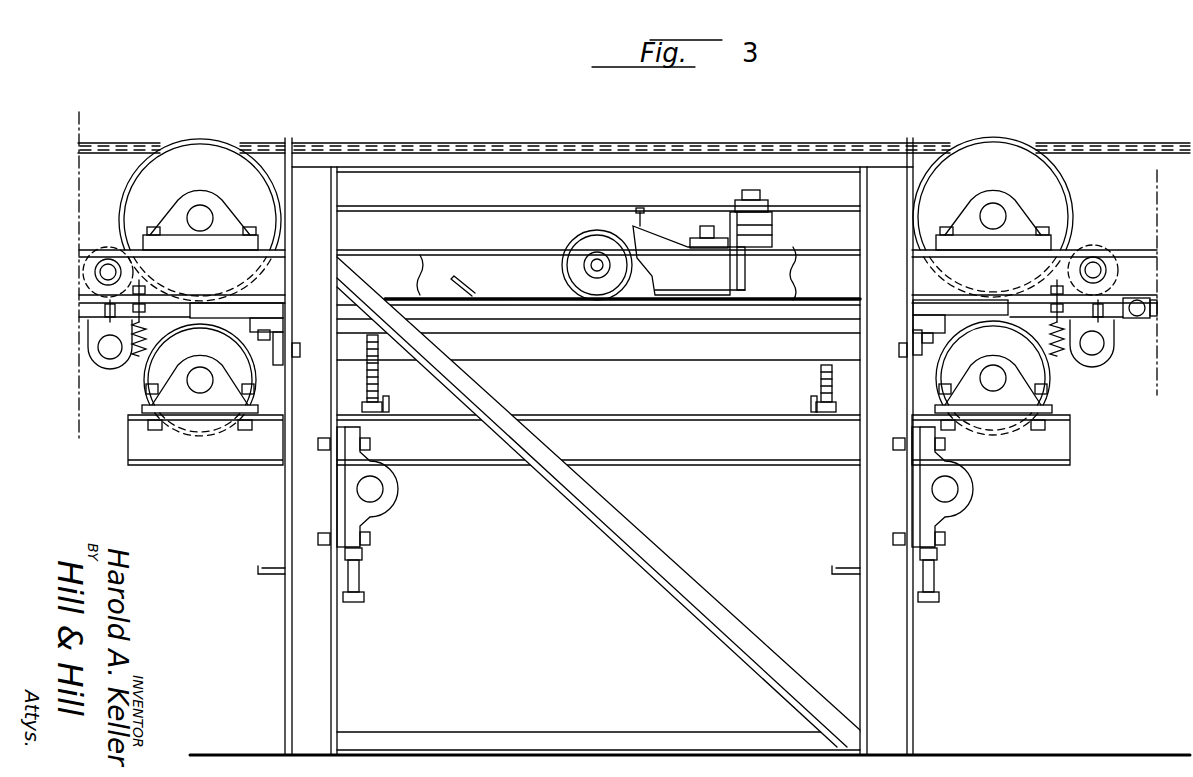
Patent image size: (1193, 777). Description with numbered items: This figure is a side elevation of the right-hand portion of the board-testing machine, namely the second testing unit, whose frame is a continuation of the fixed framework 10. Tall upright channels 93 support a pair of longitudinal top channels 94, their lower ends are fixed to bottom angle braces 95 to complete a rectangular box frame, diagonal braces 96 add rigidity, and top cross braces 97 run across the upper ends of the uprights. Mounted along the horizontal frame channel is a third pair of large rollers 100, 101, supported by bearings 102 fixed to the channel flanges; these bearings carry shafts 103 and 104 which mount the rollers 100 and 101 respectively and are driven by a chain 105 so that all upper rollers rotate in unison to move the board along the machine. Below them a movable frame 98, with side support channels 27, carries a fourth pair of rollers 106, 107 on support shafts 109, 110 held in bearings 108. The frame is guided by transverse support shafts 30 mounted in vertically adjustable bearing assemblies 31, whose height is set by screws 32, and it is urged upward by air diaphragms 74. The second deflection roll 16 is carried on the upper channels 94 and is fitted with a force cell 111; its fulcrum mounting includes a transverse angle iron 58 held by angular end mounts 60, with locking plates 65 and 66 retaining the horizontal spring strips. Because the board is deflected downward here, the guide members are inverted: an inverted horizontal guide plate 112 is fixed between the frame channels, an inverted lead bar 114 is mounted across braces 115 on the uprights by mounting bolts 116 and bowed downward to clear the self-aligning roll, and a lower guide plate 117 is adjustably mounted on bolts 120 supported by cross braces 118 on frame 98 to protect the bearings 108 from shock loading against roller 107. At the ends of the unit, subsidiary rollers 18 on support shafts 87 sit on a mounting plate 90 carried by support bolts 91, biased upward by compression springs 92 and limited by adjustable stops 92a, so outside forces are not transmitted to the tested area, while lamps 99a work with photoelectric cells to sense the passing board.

The framework 10 is at (340, 252).
The second deflection roll 16 is at (560, 250).
The subsidiary rollers 18 is at (112, 253).
The side support channels 27 is at (773, 448).
The transverse support shafts 30 is at (378, 490).
The vertically adjustable bearing assemblies 31 is at (380, 509).
The screws 32 is at (360, 593).
The transverse angle iron 58 is at (773, 245).
The angular end mounts 60 is at (773, 226).
The locking plates 65 is at (767, 253).
The locking plates 66 is at (703, 238).
The diaphragms 74 is at (266, 568).
The support shafts 87 is at (100, 272).
The mounting plate 90 is at (143, 325).
The support bolts 91 is at (143, 290).
The compression springs 92 is at (136, 346).
The adjustable stops 92a is at (106, 311).
The upright channels 93 is at (320, 201).
The longitudinal top channels 94 is at (525, 199).
The bottom angle braces 95 is at (523, 721).
The diagonal braces 96 is at (625, 568).
The top cross braces 97 is at (292, 142).
The movable frame 98 is at (755, 467).
The lamps 99a is at (1152, 308).
The large roller 100 is at (218, 142).
The large roller 101 is at (1032, 137).
The bearings 102 is at (222, 206).
The shaft 103 is at (197, 209).
The shaft 104 is at (985, 210).
The chain 105 is at (147, 144).
The roller 106 is at (148, 378).
The roller 107 is at (1050, 378).
The bearings 108 is at (237, 407).
The support shaft 109 is at (201, 367).
The support shaft 110 is at (996, 365).
The force cell 111 is at (642, 214).
The inverted horizontal guide plate 112 is at (472, 287).
The lead bar 114 is at (813, 311).
The braces 115 is at (283, 345).
The mounting bolts 116 is at (277, 350).
The lower guide plate 117 is at (630, 356).
The cross braces 118 is at (386, 405).
The bolts 120 is at (379, 381).